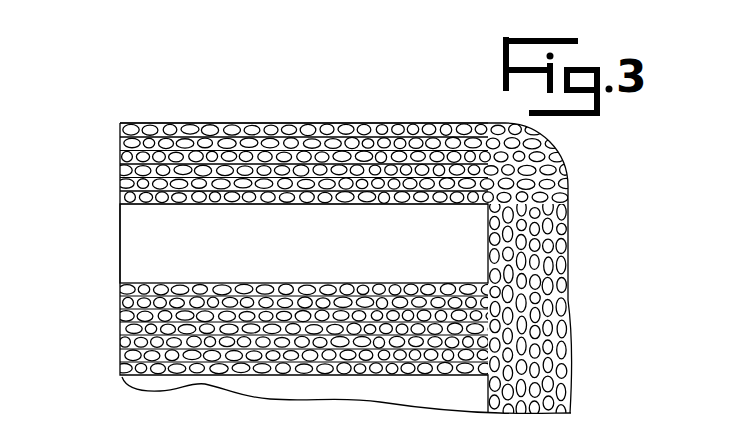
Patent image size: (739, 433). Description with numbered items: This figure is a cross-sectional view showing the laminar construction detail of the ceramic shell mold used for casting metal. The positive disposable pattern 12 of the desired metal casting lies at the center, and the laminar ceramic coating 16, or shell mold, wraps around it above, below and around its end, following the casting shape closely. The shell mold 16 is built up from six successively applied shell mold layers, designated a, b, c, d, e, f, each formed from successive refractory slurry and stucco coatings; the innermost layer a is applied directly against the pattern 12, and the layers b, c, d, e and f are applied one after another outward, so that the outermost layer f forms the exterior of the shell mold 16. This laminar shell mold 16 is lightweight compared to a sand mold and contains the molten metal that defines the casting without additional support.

The positive disposable pattern 12 is at (137, 250).
The laminar ceramic coating 16 is at (356, 118).
The shell mold layer a is at (112, 198).
The shell mold layer b is at (112, 184).
The shell mold layer c is at (112, 171).
The shell mold layer d is at (112, 157).
The shell mold layer e is at (112, 143).
The shell mold layer f is at (112, 127).